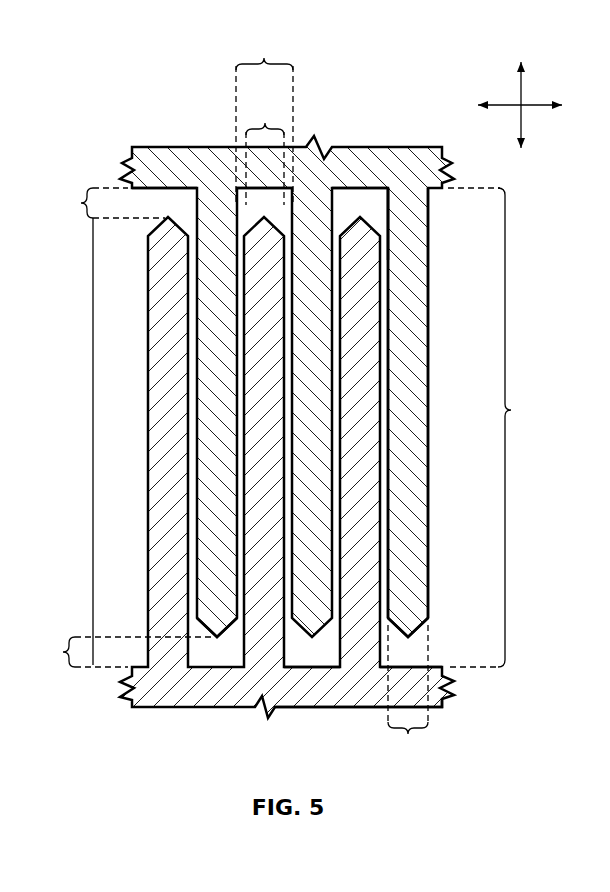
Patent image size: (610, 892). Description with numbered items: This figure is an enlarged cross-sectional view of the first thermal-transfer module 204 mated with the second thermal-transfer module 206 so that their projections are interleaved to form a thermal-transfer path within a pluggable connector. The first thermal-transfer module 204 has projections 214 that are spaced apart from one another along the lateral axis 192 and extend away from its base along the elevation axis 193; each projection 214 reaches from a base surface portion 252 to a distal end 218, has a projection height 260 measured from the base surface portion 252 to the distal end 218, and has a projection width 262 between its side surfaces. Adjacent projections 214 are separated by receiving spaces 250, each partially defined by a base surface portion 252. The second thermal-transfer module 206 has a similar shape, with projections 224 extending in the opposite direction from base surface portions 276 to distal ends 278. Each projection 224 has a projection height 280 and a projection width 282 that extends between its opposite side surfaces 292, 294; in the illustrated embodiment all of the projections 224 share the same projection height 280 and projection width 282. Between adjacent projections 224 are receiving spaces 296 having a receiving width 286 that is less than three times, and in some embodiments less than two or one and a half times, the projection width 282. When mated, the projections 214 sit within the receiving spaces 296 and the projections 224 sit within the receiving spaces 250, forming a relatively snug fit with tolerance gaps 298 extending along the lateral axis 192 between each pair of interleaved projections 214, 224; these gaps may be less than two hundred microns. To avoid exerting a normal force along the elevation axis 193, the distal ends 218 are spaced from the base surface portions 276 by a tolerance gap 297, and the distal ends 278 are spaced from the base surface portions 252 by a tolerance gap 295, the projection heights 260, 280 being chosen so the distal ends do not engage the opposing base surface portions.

The lateral axis 192 is at (523, 92).
The elevation axis 193 is at (547, 107).
The first thermal-transfer module 204 is at (461, 706).
The second thermal-transfer module 206 is at (406, 103).
The projections 214 is at (136, 357).
The distal ends 218 is at (167, 205).
The projections 224 is at (451, 343).
The receiving spaces 250 is at (218, 649).
The base surface portions 252 is at (328, 661).
The projection height 260 is at (93, 440).
The projection width 262 is at (265, 123).
The base surface portions 276 is at (378, 192).
The distal end 278 is at (408, 649).
The projection height 280 is at (504, 427).
The projection width 282 is at (408, 696).
The receiving width 286 is at (264, 118).
The side surface 292 is at (383, 232).
The side surface 294 is at (431, 550).
The tolerance gap 295 is at (121, 652).
The receiving spaces 296 is at (252, 207).
The tolerance gap 297 is at (101, 203).
The tolerance gaps 298 is at (389, 452).